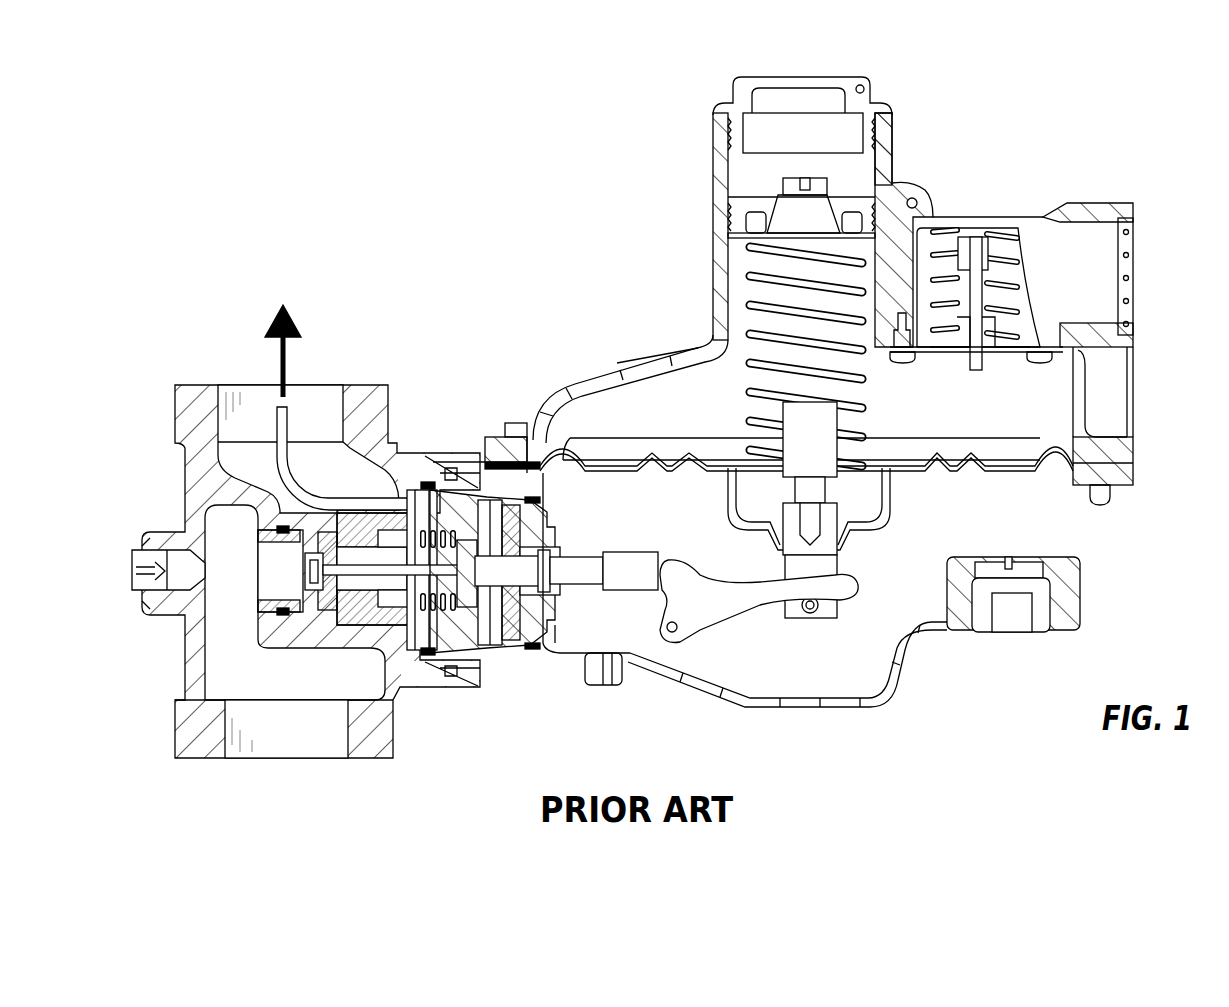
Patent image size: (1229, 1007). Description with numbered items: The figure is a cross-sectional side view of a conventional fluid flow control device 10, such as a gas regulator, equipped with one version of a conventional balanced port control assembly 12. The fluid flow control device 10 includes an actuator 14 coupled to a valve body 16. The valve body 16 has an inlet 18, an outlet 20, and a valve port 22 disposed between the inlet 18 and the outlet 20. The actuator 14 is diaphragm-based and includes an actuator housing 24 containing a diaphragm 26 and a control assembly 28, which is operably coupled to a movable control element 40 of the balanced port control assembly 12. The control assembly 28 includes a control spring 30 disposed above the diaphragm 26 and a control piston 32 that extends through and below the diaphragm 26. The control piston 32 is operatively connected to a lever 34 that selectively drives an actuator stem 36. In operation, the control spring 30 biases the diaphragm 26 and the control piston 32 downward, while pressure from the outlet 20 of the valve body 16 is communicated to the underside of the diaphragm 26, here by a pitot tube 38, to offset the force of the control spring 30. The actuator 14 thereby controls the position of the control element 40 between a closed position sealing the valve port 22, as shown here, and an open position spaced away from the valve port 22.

The fluid flow control device 10 is at (902, 63).
The balanced port control assembly 12 is at (462, 615).
The actuator 14 is at (1027, 196).
The valve body 16 is at (374, 361).
The inlet 18 is at (328, 747).
The outlet 20 is at (258, 397).
The valve port 22 is at (296, 613).
The actuator housing 24 is at (1103, 396).
The diaphragm 26 is at (1023, 473).
The control assembly 28 is at (871, 529).
The control spring 30 is at (760, 253).
The control piston 32 is at (806, 428).
The lever 34 is at (727, 607).
The actuator stem 36 is at (590, 578).
The pitot tube 38 is at (290, 424).
The control element 40 is at (323, 608).